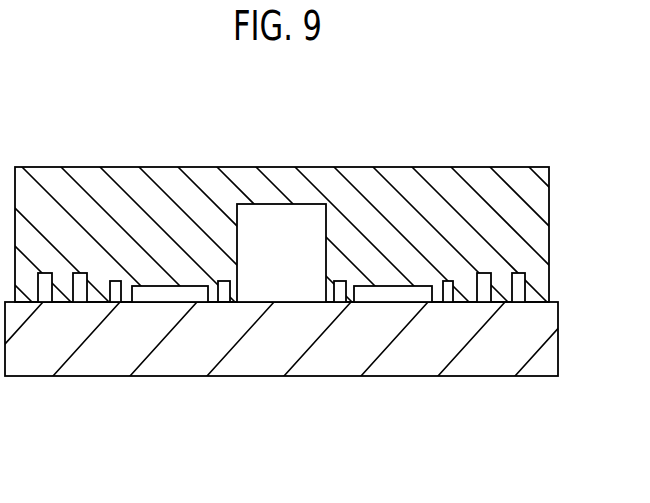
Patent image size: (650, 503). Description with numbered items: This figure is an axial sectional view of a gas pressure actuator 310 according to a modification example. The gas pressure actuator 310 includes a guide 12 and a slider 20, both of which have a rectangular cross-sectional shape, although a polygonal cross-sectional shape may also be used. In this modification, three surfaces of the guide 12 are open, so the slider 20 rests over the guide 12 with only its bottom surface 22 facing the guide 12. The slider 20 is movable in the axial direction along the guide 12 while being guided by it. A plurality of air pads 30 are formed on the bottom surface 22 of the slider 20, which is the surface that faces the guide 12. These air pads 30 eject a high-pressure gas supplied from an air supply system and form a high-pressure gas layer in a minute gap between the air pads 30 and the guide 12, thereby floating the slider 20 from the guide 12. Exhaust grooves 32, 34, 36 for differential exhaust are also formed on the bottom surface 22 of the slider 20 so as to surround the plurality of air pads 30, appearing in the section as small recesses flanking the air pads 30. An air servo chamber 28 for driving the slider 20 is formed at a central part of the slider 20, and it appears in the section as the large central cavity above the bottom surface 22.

The guide 12 is at (541, 367).
The slider 20 is at (357, 175).
The bottom surface 22 is at (217, 303).
The air servo chamber 28 is at (298, 293).
The air pads 30 is at (178, 297).
The exhaust groove 32 is at (115, 297).
The exhaust groove 34 is at (80, 297).
The exhaust groove 36 is at (45, 297).
The gas pressure actuator 310 is at (300, 486).